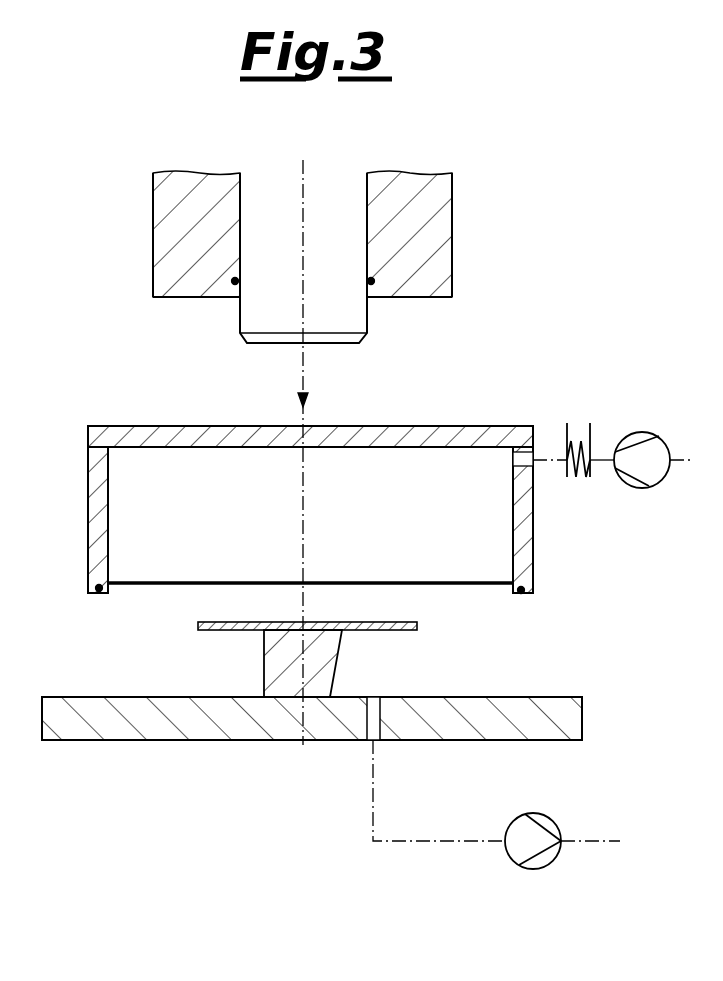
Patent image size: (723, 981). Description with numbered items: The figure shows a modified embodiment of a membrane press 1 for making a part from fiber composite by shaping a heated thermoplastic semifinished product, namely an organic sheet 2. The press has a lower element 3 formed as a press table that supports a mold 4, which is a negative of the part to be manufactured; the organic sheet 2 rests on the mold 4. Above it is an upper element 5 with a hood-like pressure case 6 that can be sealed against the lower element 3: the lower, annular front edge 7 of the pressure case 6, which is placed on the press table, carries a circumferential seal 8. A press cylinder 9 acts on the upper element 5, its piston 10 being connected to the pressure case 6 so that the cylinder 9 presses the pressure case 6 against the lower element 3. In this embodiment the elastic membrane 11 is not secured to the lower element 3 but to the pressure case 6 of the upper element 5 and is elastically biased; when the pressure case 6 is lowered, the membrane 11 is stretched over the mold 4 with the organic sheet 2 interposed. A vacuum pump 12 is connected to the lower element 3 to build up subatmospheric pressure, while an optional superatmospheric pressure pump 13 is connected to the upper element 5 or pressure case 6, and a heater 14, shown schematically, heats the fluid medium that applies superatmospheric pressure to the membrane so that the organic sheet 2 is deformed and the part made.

The membrane press 1 is at (570, 228).
The organic sheet 2 is at (402, 630).
The lower element 3 is at (183, 733).
The mold 4 is at (287, 688).
The upper element 5 is at (294, 491).
The pressure case 6 is at (142, 433).
The annular front edge 7 is at (84, 605).
The circumferential seal 8 is at (100, 596).
The press cylinder 9 is at (304, 203).
The piston 10 is at (358, 318).
The elastic membrane 11 is at (395, 583).
The vacuum pump 12 is at (512, 858).
The superatmospheric pressure pump 13 is at (637, 437).
The heater 14 is at (579, 500).